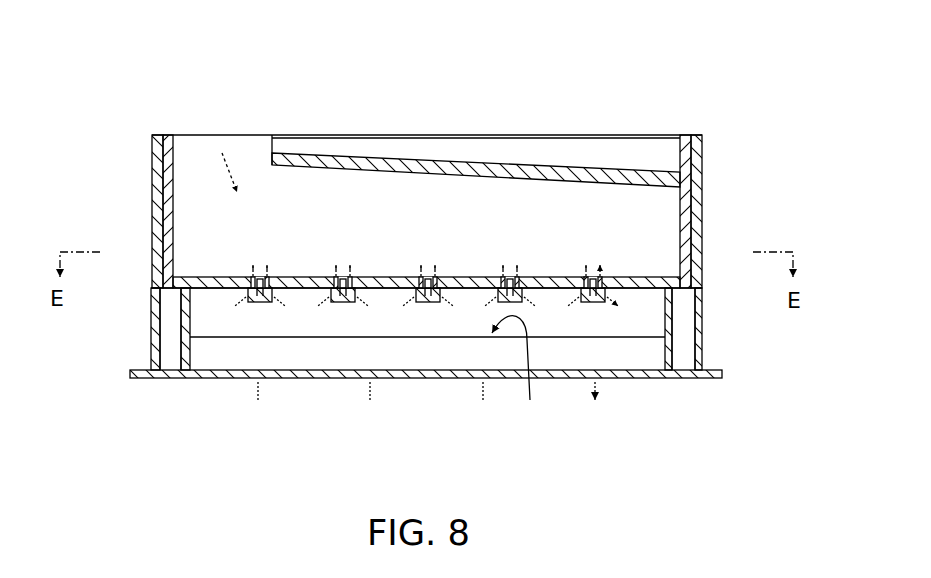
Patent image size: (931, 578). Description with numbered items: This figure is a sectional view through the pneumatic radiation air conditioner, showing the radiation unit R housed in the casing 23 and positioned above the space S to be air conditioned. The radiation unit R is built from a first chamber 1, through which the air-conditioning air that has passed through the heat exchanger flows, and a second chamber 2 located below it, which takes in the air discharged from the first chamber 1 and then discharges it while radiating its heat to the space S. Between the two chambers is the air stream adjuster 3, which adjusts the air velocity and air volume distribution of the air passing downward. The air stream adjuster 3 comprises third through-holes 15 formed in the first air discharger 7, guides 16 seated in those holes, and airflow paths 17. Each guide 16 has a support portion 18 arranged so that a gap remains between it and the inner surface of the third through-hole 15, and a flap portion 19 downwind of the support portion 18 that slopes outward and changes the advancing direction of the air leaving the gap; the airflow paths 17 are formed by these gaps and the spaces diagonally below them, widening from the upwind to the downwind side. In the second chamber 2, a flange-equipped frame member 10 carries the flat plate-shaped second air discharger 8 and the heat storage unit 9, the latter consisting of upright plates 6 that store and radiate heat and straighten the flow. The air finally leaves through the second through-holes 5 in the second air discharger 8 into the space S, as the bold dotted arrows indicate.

The first chamber 1 is at (672, 172).
The radiation unit R is at (650, 148).
The casing 23 is at (152, 187).
The first air discharger 7 is at (302, 276).
The third through-holes 15 is at (340, 277).
The guides 16 is at (508, 275).
The air stream adjuster 3 is at (525, 275).
The support portion 18 is at (503, 283).
The airflow paths 17 is at (325, 297).
The flap portion 19 is at (502, 300).
The second chamber 2 is at (297, 380).
The flange-equipped frame member 10 is at (173, 378).
The second air discharger 8 is at (327, 378).
The plates 6 is at (550, 360).
The heat storage unit 9 is at (515, 370).
The second through-holes 5 is at (360, 378).
The space to be air conditioned S is at (414, 462).